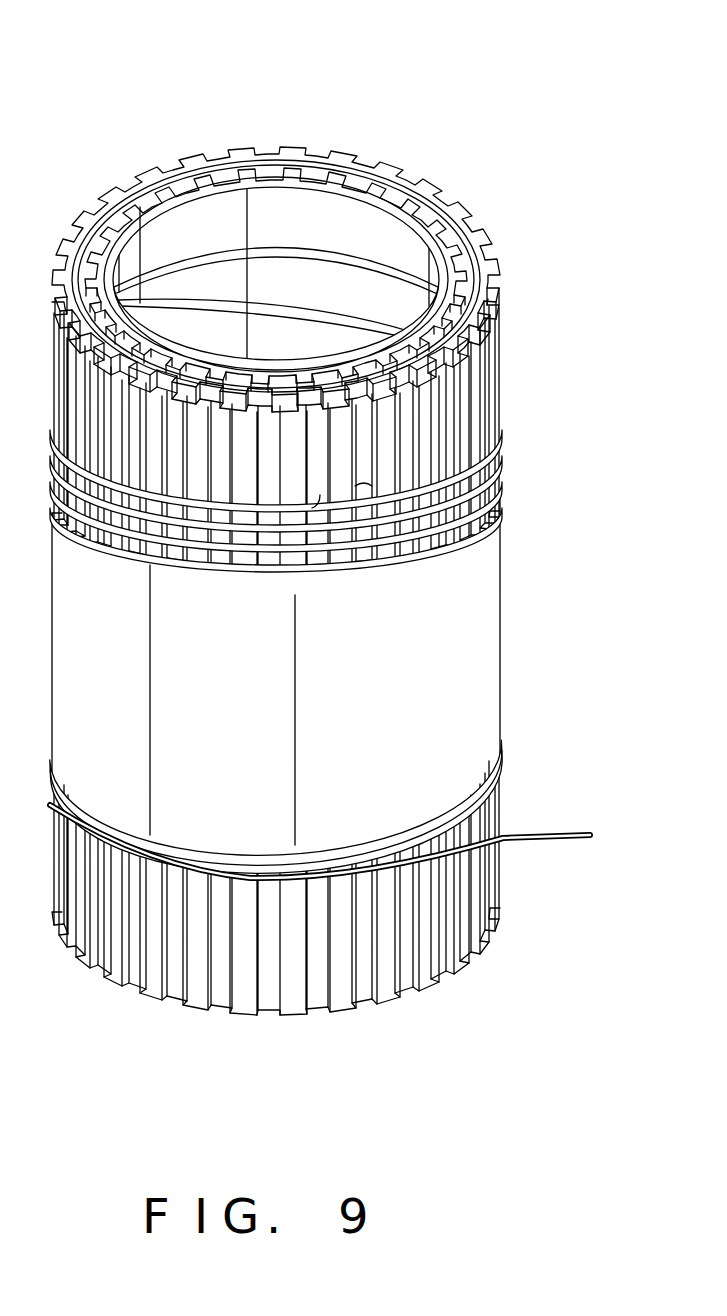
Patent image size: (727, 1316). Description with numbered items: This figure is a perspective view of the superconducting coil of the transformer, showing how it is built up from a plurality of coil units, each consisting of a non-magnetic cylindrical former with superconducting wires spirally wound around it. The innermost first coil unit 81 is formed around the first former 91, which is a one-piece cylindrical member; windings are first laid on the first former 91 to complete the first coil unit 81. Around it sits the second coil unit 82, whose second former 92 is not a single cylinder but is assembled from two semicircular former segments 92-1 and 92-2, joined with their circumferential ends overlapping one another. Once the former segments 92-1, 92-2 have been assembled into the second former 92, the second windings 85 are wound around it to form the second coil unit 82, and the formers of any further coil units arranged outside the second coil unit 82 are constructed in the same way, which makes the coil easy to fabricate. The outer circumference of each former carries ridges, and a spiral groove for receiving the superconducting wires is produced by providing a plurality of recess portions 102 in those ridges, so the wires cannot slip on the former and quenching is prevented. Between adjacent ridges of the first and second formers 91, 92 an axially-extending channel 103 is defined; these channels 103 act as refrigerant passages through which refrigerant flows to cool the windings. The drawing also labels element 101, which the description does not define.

The first coil unit 81 is at (357, 217).
The second coil unit 82 is at (484, 186).
The second windings 85 is at (320, 656).
The first former 91 is at (270, 180).
The second former 92 is at (276, 200).
The former segment 92-1 is at (147, 172).
The former segment 92-2 is at (98, 52).
The binding wire 101 is at (192, 495).
The recess portions 102 is at (347, 560).
The axially-extending channel 103 is at (219, 503).